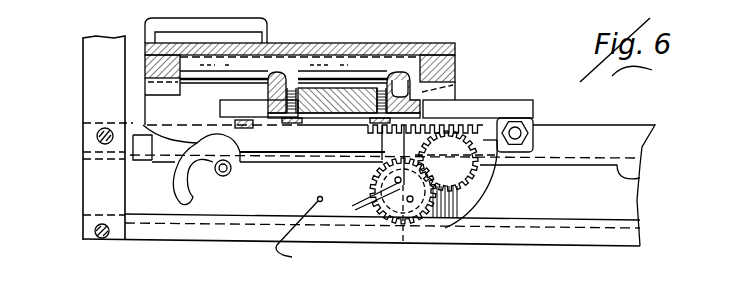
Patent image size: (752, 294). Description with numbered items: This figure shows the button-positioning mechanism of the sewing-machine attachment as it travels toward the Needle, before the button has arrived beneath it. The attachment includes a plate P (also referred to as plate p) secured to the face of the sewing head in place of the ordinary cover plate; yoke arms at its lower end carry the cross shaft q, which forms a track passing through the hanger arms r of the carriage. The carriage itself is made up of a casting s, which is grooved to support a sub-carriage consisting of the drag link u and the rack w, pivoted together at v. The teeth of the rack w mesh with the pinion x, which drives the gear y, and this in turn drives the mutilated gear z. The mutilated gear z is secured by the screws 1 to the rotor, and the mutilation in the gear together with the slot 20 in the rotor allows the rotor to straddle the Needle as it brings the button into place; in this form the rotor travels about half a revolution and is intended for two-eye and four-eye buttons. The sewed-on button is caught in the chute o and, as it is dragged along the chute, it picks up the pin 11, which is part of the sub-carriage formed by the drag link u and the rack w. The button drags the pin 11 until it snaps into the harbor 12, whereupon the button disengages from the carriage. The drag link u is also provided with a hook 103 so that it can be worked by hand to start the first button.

The harbor 12 is at (83, 140).
The cross shaft q is at (213, 71).
The plate P is at (290, 60).
The hanger arms r is at (309, 70).
The casting s is at (340, 97).
The plate p is at (400, 63).
The rack w is at (472, 123).
The chute o is at (640, 178).
The hook 103 is at (190, 194).
The pin 11 is at (238, 172).
The slot 20 is at (413, 228).
The mutilated gear z is at (395, 180).
The screws 1 is at (366, 197).
The pinion x is at (447, 133).
The gear y is at (458, 196).
The drag link u is at (493, 152).
The pivot v is at (535, 123).
The needle Needle is at (308, 233).